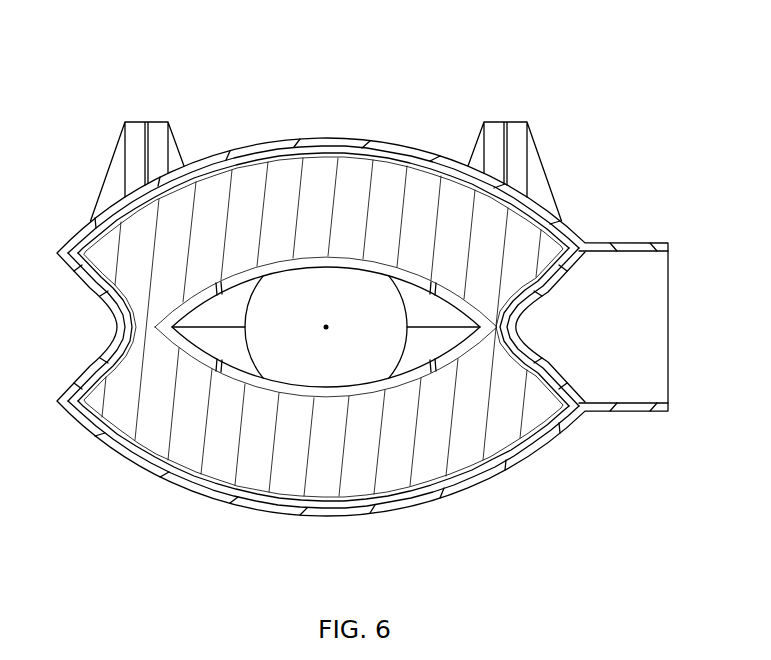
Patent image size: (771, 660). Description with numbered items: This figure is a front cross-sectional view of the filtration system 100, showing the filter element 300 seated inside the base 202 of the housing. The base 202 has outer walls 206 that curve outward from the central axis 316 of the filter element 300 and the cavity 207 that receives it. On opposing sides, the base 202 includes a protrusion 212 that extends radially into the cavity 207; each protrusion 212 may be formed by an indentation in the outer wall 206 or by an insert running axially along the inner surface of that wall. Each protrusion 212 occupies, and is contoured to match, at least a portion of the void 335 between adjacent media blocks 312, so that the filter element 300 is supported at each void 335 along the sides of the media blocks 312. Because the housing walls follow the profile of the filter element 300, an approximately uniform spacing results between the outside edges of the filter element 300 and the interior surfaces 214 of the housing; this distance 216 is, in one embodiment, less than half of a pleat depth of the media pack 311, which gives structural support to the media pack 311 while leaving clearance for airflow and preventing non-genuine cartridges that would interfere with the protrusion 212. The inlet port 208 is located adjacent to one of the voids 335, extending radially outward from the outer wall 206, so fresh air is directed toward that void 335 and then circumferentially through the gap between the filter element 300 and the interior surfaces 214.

The filtration system 100 is at (82, 108).
The base 202 is at (376, 139).
The outer walls 206 is at (314, 137).
The cavity 207 is at (215, 160).
The inlet port 208 is at (670, 344).
The protrusion 212 is at (575, 397).
The interior surfaces 214 is at (296, 516).
The distance 216 is at (381, 483).
The filter element 300 is at (128, 446).
The media pack 311 is at (267, 187).
The media blocks 312 is at (516, 240).
The central axis 316 is at (326, 327).
The void 335 is at (524, 324).